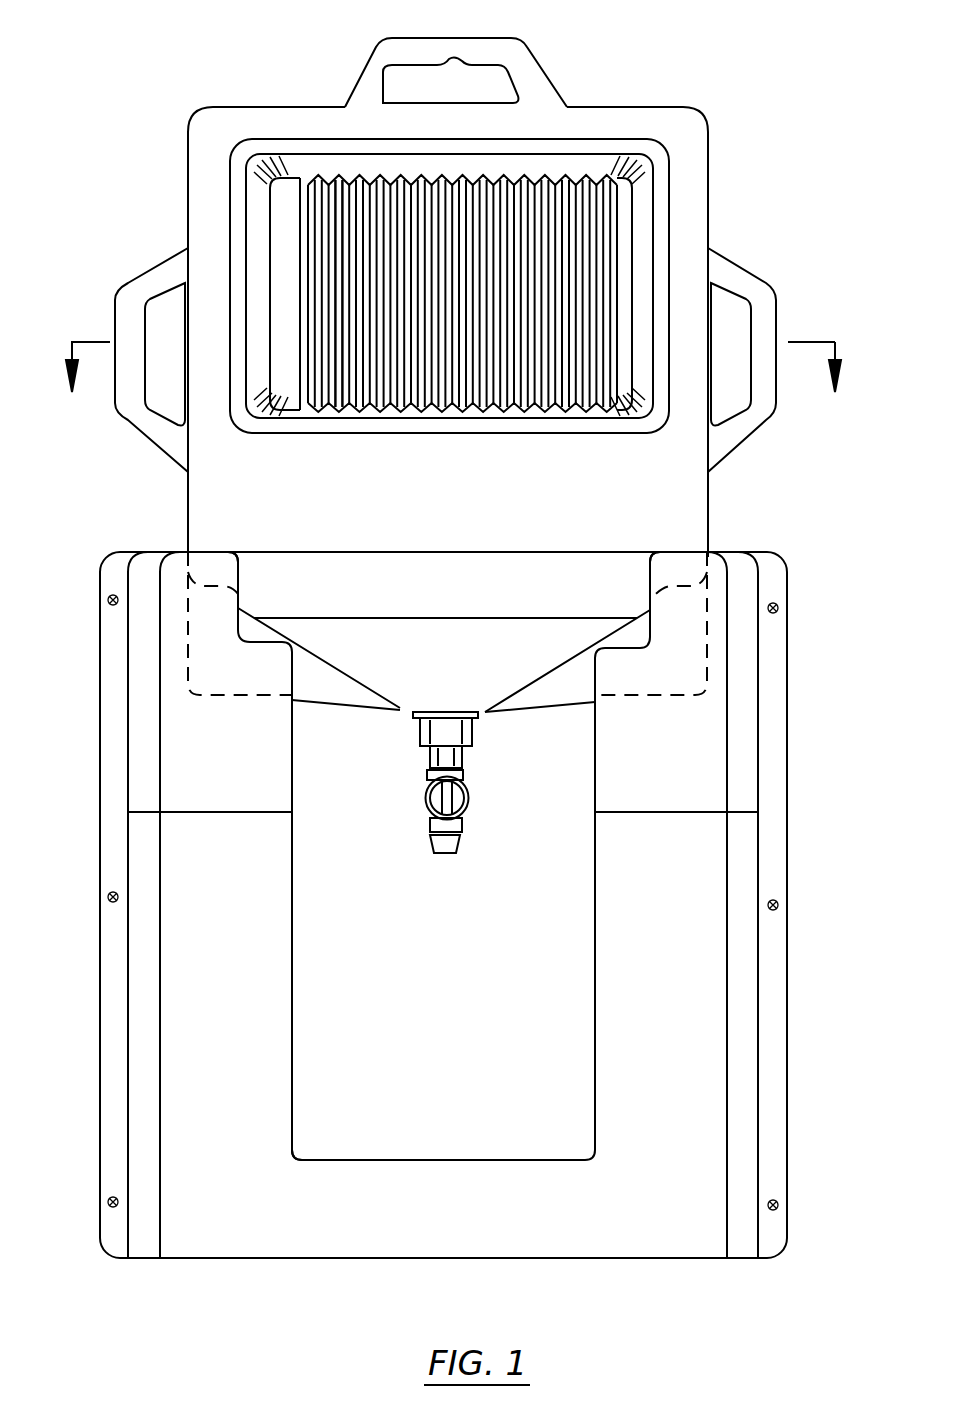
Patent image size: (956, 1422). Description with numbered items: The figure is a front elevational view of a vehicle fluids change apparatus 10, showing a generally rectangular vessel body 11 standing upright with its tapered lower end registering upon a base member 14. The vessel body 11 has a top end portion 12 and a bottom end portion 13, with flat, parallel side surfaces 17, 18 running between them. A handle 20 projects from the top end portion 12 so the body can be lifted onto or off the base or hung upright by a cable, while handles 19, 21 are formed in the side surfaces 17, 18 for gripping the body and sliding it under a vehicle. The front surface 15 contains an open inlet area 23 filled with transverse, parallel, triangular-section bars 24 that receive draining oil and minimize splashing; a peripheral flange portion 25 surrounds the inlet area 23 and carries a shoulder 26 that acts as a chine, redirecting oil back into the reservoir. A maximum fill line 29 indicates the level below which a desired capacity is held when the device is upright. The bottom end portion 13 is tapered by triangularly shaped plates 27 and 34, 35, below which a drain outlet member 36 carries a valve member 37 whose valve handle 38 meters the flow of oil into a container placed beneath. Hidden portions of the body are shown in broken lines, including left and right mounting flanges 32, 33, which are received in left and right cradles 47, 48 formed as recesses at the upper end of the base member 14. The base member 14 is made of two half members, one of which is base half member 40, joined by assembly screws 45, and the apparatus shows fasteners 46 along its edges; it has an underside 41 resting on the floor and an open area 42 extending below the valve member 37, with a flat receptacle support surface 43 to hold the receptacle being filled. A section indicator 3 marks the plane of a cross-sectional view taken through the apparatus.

The vehicle fluids change apparatus 10 is at (240, 92).
The vessel body 11 is at (205, 502).
The top end portion 12 is at (610, 106).
The bottom end portion 13 is at (418, 702).
The base member 14 is at (192, 1040).
The front surface 15 is at (487, 468).
The side surface 17 is at (186, 236).
The side surface 18 is at (710, 216).
The handle 19 is at (150, 292).
The handle 20 is at (478, 52).
The handle 21 is at (760, 330).
The inlet area 23 is at (310, 208).
The bar 24 is at (346, 178).
The peripheral flange portion 25 is at (494, 134).
The shoulder 26 is at (300, 165).
The triangularly shaped plate 27 is at (518, 652).
The maximum fill line 29 is at (306, 414).
The section line 3- 3 is at (452, 368).
The left mounting flange 32 is at (262, 622).
The right mounting flange 33 is at (640, 618).
The triangularly shaped plate 34 is at (372, 706).
The triangularly shaped plate 35 is at (590, 658).
The drain outlet member 36 is at (472, 732).
The valve member 37 is at (462, 784).
The valve handle 38 is at (440, 800).
The base half member 40 is at (248, 1140).
The underside 41 is at (660, 1264).
The open area 42 is at (485, 1108).
The receptacle support surface 43 is at (332, 1158).
The assembly screws 45 is at (770, 1082).
The fasteners 46 is at (110, 900).
The left cradle 47 is at (240, 574).
The right cradle 48 is at (640, 574).